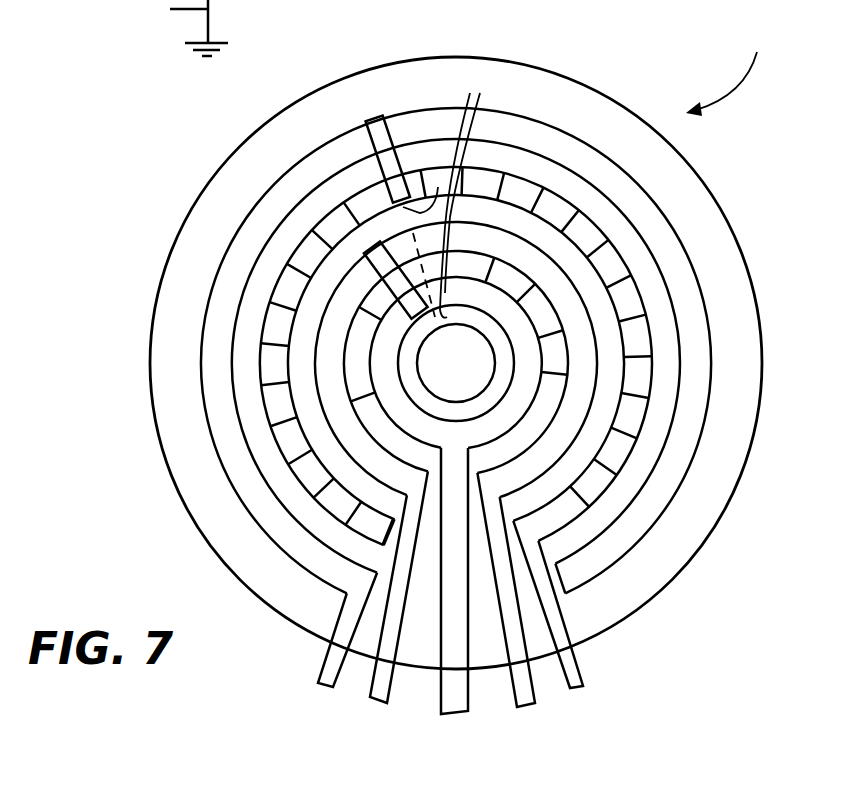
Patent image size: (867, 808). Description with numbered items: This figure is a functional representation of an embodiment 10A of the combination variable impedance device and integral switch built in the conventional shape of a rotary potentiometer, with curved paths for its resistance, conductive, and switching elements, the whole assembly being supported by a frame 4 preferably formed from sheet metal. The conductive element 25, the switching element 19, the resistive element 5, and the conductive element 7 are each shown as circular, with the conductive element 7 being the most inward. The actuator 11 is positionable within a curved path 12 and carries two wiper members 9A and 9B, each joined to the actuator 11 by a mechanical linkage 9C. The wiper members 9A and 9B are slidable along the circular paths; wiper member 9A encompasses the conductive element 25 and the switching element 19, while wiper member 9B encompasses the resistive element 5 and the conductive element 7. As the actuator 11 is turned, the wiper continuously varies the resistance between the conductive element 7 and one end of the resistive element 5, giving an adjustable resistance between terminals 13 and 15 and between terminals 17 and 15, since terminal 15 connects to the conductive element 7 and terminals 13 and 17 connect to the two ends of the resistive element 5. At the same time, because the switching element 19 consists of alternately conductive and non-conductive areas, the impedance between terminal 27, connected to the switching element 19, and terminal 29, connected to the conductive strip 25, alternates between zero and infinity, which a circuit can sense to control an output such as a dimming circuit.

The frame 4 is at (542, 68).
The resistive element 5 is at (543, 267).
The conductive element 7 is at (527, 333).
The wiper member 9A is at (375, 262).
The wiper member 9B is at (393, 132).
The mechanical linkage 9C is at (454, 191).
The rotary device embodiment 10A is at (798, 46).
The actuator 11 is at (468, 379).
The curved path 12 is at (498, 378).
The terminal 13 is at (372, 705).
The terminal 15 is at (457, 710).
The terminal 17 is at (528, 703).
The switching element 19 is at (542, 200).
The conductive element 25 is at (537, 127).
The terminal 27 is at (583, 688).
The terminal 29 is at (318, 684).